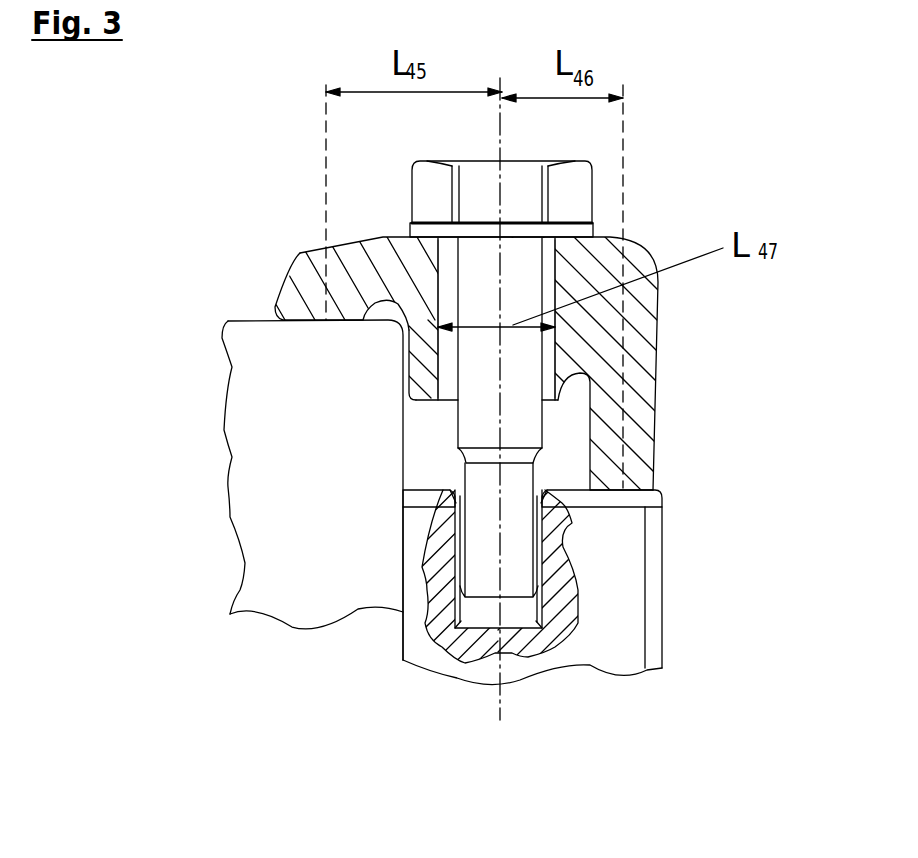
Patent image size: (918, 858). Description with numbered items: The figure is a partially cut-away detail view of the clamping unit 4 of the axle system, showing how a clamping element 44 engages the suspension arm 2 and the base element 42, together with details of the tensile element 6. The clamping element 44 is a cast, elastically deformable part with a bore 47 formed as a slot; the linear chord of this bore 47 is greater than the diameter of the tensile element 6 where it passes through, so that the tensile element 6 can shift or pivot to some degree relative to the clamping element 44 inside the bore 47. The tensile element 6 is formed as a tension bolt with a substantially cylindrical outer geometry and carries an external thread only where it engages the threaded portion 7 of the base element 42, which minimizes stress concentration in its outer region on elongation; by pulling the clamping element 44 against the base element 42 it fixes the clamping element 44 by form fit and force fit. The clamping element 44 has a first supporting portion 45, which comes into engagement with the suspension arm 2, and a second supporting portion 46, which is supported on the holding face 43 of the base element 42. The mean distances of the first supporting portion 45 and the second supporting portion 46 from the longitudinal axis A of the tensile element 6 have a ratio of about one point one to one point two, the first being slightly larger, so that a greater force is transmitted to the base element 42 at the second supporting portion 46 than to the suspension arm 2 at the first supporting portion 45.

The suspension arm 2 is at (318, 598).
The clamping unit 4 is at (680, 649).
The tensile element 6 is at (520, 438).
The threaded portion 7 is at (541, 602).
The base element 42 is at (622, 570).
The holding face 43 is at (633, 487).
The clamping element 44 is at (637, 307).
The first supporting portion 45 is at (315, 308).
The second supporting portion 46 is at (610, 477).
The bore 47 is at (623, 237).
The longitudinal axis A is at (498, 698).